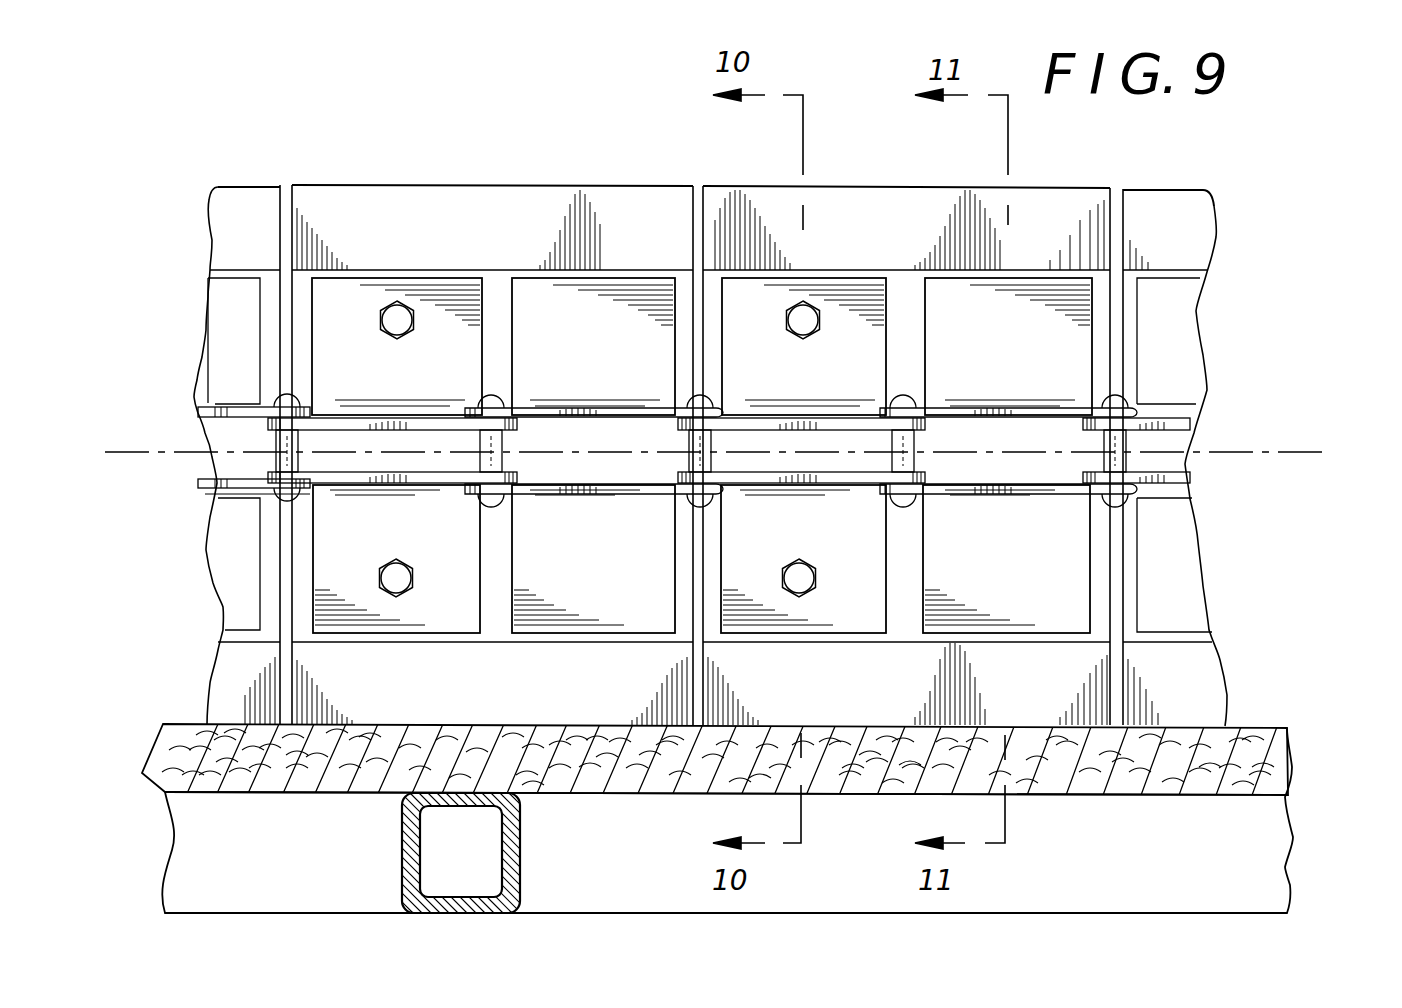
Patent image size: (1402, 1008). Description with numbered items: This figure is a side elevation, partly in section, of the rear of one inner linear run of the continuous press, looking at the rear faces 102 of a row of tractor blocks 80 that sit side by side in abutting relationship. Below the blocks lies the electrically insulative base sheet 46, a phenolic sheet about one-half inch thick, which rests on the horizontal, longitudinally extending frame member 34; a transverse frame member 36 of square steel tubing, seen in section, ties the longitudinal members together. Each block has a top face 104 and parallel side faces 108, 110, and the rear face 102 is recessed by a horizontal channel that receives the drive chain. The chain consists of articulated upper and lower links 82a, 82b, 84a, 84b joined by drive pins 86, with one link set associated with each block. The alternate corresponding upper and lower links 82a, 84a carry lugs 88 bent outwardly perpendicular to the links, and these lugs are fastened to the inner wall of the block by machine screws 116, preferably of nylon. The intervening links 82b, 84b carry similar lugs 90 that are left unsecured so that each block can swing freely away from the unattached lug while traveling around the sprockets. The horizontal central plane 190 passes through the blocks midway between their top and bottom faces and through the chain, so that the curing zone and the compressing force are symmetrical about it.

The longitudinally extending frame member 34 is at (1290, 838).
The transverse frame member 36 is at (522, 868).
The electrically insulative base sheet 46 is at (1283, 752).
The tractor block 80 is at (408, 168).
The upper link 82a is at (412, 418).
The upper link 82b is at (612, 418).
The lower link 84a is at (410, 484).
The lower link 84b is at (606, 484).
The drive pin 86 is at (505, 447).
The lug 88 is at (468, 590).
The lug 90 is at (1015, 590).
The rear face 102 is at (608, 206).
The top face 104 is at (503, 186).
The side face 108 is at (290, 187).
The side face 110 is at (700, 186).
The machine screw 116 is at (400, 300).
The central plane 190 is at (1273, 452).